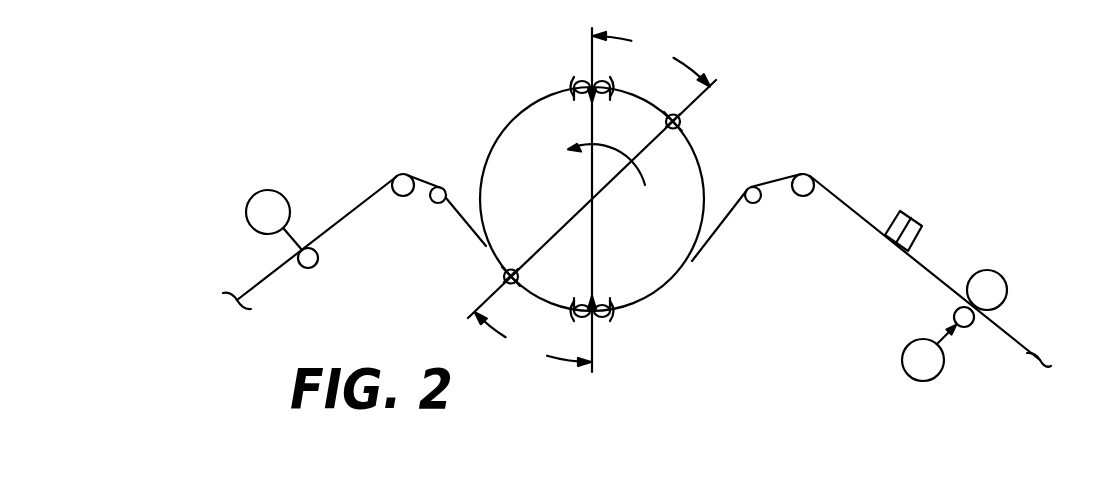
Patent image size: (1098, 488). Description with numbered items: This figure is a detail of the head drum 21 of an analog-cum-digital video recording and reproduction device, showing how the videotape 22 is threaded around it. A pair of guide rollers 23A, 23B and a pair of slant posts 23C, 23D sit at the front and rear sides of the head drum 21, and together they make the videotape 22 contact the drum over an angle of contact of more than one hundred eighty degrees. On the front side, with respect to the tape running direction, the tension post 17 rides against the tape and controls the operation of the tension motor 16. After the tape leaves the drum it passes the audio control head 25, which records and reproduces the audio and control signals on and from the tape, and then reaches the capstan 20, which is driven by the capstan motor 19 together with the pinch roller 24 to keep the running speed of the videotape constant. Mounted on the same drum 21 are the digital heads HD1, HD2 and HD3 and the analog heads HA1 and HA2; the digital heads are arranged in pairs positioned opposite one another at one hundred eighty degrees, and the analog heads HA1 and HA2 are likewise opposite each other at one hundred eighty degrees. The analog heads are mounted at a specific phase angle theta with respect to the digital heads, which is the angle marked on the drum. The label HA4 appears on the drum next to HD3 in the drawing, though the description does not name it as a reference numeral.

The tension motor 16 is at (263, 213).
The tension post 17 is at (309, 267).
The capstan motor 19 is at (912, 357).
The capstan 20 is at (958, 316).
The head drum 21 is at (492, 143).
The videotape 22 is at (853, 208).
The guide roller 23A is at (402, 184).
The guide roller 23B is at (805, 184).
The slant post 23C is at (437, 200).
The slant post 23D is at (755, 203).
The pinch roller 24 is at (995, 288).
The audio control head 25 is at (922, 218).
The digital head HD1 is at (571, 107).
The digital head HD2 is at (614, 107).
The digital head HD3 is at (614, 294).
The analog head HA1 is at (675, 141).
The analog head HA2 is at (511, 256).
The analog head HA4 is at (568, 294).